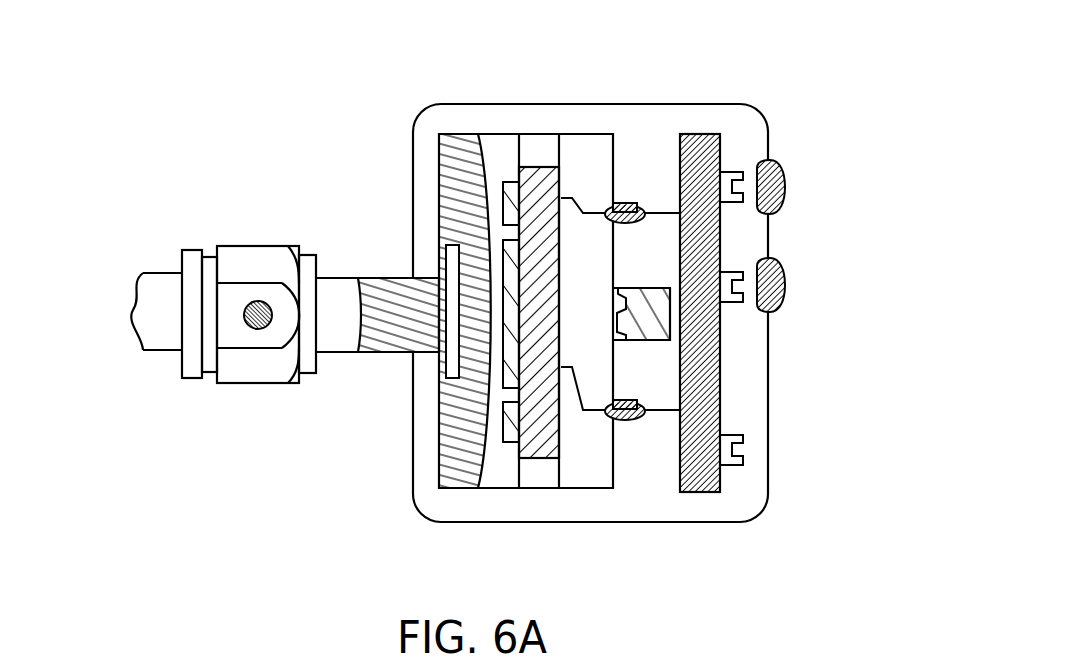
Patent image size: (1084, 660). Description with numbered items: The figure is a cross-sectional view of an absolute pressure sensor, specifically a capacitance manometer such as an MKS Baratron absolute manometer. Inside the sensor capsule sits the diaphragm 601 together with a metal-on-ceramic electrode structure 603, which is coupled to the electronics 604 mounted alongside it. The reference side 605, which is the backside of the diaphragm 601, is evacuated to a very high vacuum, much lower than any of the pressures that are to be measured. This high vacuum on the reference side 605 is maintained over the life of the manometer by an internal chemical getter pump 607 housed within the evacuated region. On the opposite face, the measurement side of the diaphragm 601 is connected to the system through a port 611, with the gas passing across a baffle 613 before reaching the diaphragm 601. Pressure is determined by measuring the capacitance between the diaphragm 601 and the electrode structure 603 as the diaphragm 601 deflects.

The diaphragm 601 is at (460, 160).
The metal-on-ceramic electrode structure 603 is at (518, 157).
The electronics 604 is at (720, 148).
The reference side 605 is at (613, 488).
The internal chemical getter pump 607 is at (653, 315).
The port 611 is at (392, 352).
The baffle 613 is at (443, 320).